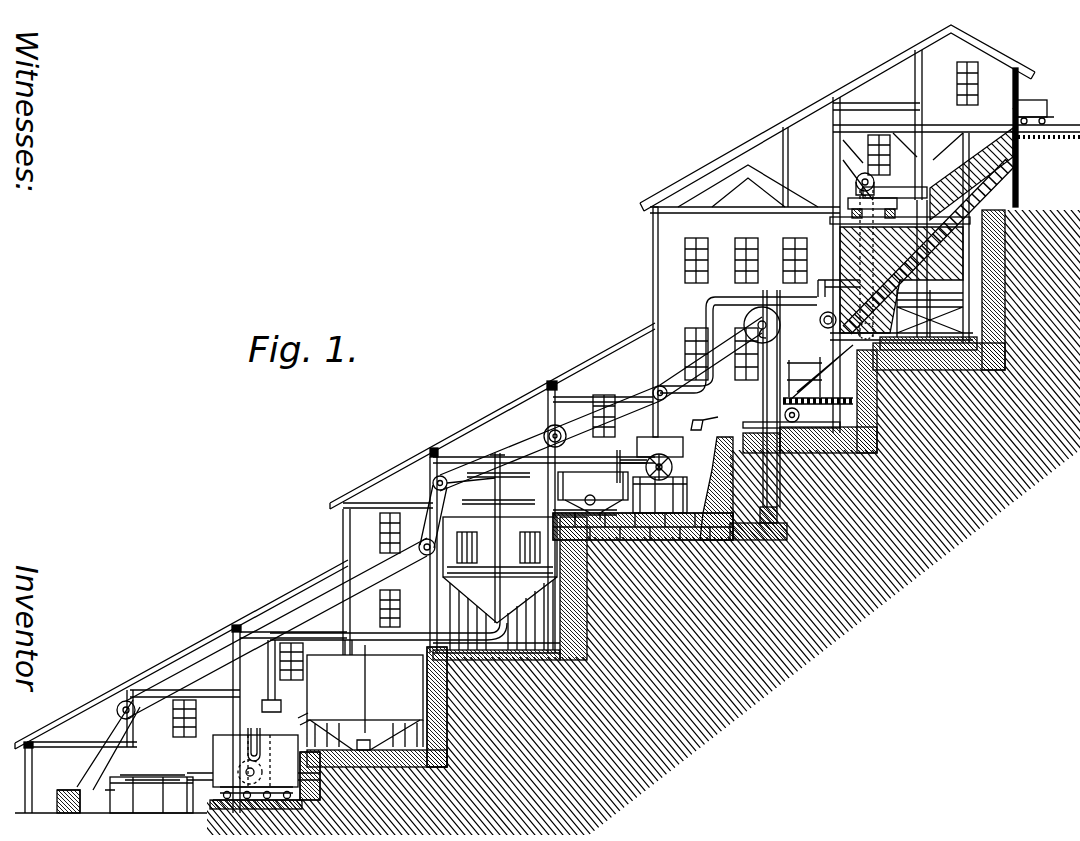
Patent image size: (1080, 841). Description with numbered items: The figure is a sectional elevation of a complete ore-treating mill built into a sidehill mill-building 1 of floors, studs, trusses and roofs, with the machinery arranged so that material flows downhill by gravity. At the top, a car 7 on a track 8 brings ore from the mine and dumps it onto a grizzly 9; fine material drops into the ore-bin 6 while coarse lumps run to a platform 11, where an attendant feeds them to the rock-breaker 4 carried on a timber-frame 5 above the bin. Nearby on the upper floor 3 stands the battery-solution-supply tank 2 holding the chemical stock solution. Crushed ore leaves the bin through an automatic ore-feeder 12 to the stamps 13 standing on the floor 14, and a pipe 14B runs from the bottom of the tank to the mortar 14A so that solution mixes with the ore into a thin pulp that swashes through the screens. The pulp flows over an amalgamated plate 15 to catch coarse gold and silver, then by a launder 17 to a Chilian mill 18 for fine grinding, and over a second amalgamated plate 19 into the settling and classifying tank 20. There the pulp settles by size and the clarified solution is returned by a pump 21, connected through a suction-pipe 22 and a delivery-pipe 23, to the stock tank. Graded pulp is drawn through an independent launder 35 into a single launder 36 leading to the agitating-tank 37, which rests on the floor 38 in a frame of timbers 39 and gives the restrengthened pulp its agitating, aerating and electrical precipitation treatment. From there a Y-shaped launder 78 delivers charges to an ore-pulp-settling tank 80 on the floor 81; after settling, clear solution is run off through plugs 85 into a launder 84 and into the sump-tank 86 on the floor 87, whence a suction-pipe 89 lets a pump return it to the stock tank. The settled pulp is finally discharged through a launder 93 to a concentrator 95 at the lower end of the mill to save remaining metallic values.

The sidehill mill-building 1 is at (503, 400).
The battery-solution-supply tank 2 is at (950, 280).
The upper floor 3 is at (912, 360).
The rock-breaker 4 is at (876, 183).
The timber-frame 5 is at (834, 224).
The ore-bin 6 is at (845, 257).
The car 7 is at (1042, 100).
The track 8 is at (1063, 133).
The grizzly 9 is at (960, 170).
The platform 11 is at (905, 198).
The automatic ore-feeder 12 is at (815, 322).
The stamps 13 is at (780, 380).
The floor 14 is at (742, 428).
The mortar 14A is at (782, 401).
The pipe 14B is at (880, 400).
The amalgamated plate 15 is at (692, 420).
The launder 17 is at (687, 470).
The Chilian mill 18 is at (660, 447).
The amalgamated plate 19 is at (600, 465).
The settling and classifying tank 20 is at (545, 485).
The pump 21 is at (665, 540).
The suction-pipe 22 is at (626, 460).
The delivery-pipe 23 is at (648, 425).
The launder 35 is at (615, 540).
The launder 36 is at (548, 512).
The agitating-tank 37 is at (445, 583).
The floor 38 is at (528, 670).
The frame of timbers 39 is at (445, 612).
The Y-shaped launder 78 is at (415, 660).
The ore-pulp-settling tank 80 is at (392, 645).
The floor 81 is at (403, 765).
The launder 84 is at (291, 719).
The plugs 85 is at (305, 690).
The sump-tank 86 is at (225, 753).
The floor 87 is at (300, 800).
The suction-pipe 89 is at (254, 727).
The launder 93 is at (190, 773).
The concentrator 95 is at (85, 772).